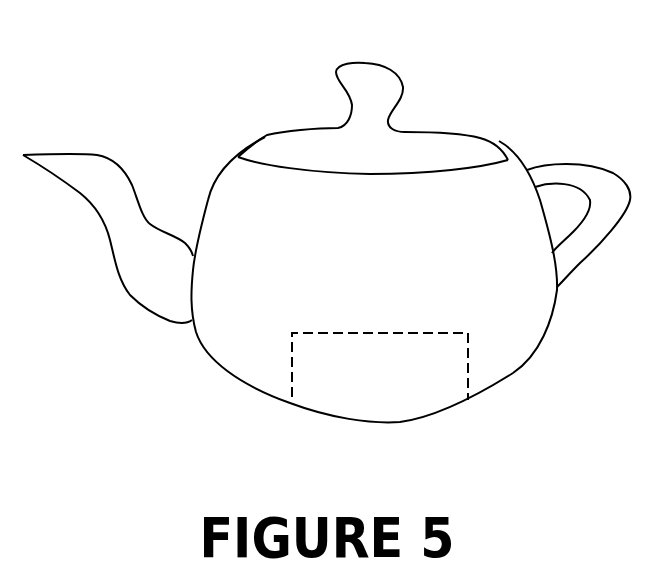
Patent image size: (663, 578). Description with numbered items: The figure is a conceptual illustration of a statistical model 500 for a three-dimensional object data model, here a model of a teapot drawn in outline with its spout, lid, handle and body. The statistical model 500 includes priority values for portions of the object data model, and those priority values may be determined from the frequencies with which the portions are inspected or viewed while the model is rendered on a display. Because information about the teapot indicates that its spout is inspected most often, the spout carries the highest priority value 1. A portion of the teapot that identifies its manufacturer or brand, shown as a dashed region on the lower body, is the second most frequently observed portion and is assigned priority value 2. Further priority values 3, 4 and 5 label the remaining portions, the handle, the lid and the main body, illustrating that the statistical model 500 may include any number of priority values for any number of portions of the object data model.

The statistical model 500 is at (172, 68).
The priority value of the spout 1 is at (108, 238).
The priority value of the manufacturer or brand portion 2 is at (380, 366).
The priority value of a teapot portion 3 is at (578, 225).
The priority value of a teapot portion 4 is at (373, 118).
The priority value of a teapot portion 5 is at (374, 279).